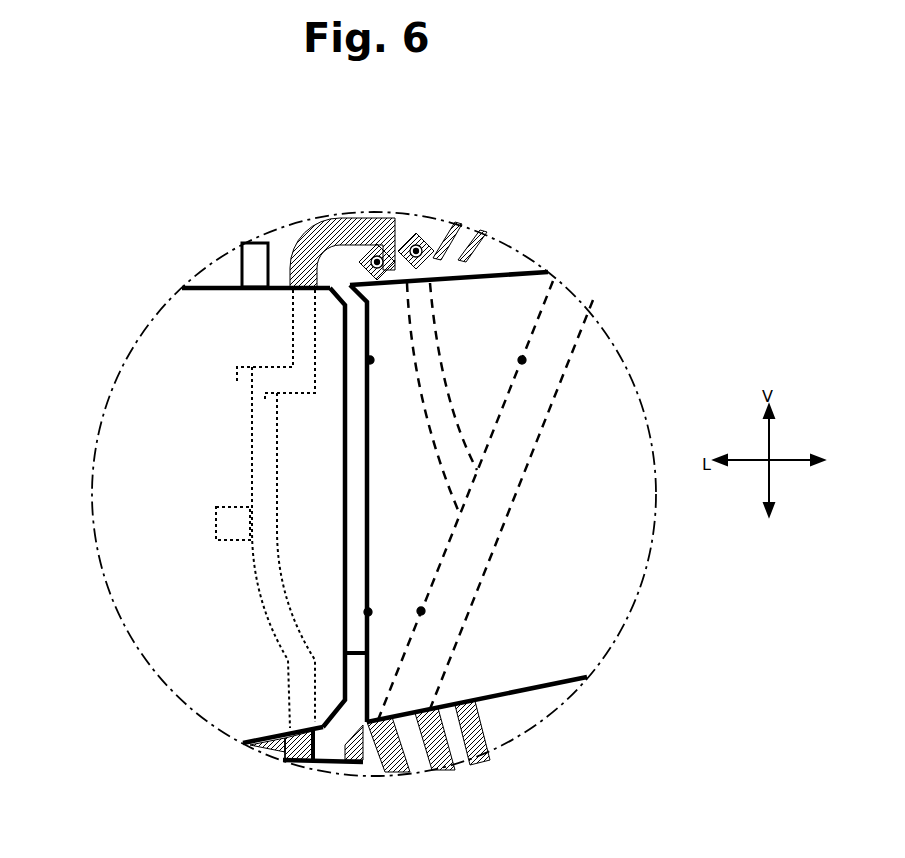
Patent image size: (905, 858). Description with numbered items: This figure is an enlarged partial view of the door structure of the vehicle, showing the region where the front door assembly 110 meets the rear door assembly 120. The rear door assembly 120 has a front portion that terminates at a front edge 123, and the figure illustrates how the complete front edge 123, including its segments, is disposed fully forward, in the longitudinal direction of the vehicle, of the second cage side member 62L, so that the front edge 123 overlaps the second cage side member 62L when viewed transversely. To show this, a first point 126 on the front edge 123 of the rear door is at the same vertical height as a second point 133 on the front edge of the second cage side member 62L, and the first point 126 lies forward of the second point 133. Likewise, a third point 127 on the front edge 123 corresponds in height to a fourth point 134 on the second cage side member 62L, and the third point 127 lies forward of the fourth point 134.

The front door assembly 110 is at (173, 352).
The rear door assembly 120 is at (547, 668).
The front edge 123 is at (368, 458).
The first point 126 is at (368, 612).
The third point 127 is at (370, 360).
The second point 133 is at (421, 611).
The fourth point 134 is at (522, 360).
The second cage side member 62L is at (516, 492).